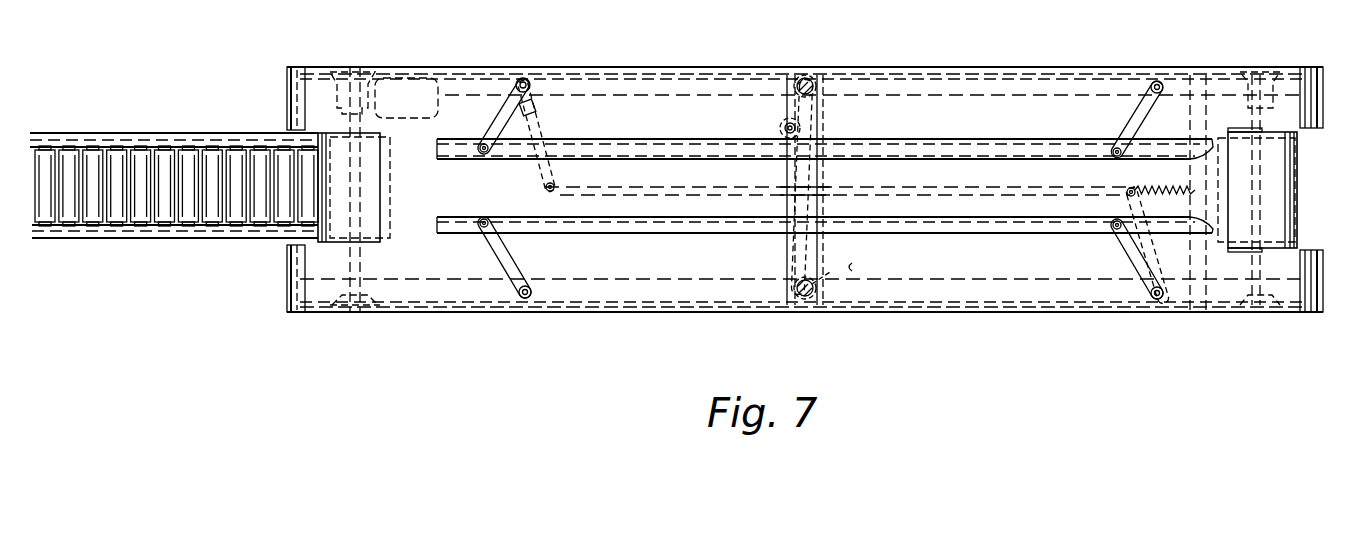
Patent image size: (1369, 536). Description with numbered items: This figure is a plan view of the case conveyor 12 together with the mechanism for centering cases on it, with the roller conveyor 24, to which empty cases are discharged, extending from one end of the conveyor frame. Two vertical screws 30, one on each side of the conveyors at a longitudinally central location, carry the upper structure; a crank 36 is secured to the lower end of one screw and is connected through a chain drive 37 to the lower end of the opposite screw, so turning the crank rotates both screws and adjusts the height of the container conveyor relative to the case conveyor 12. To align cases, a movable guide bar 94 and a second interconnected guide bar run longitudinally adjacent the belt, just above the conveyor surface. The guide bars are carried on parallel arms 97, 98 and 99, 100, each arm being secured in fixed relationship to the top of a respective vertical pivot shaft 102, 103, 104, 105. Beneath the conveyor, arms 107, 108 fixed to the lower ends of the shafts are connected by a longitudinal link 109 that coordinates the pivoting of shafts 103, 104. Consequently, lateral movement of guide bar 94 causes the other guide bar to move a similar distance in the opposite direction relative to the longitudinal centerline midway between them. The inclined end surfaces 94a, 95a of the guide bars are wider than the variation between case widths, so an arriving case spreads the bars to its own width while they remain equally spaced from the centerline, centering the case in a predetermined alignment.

The case conveyor 12 is at (1040, 330).
The roller conveyor 24 is at (196, 252).
The vertical screw 30 is at (812, 73).
The crank 36 is at (852, 272).
The chain drive 37 is at (820, 175).
The guide bar 94 is at (985, 230).
The end surface of guide bar 94a is at (1208, 225).
The end surface of guide bar 95a is at (1207, 150).
The parallel arm 97 is at (513, 258).
The parallel arm 98 is at (1127, 257).
The parallel arm 99 is at (495, 118).
The parallel arm 100 is at (1128, 123).
The vertical pivot shaft 102 is at (527, 302).
The vertical pivot shaft 103 is at (1157, 302).
The vertical pivot shaft 104 is at (526, 78).
The vertical pivot shaft 105 is at (1161, 80).
The arm 107 is at (1172, 305).
The arm 108 is at (553, 122).
The longitudinal link 109 is at (928, 186).